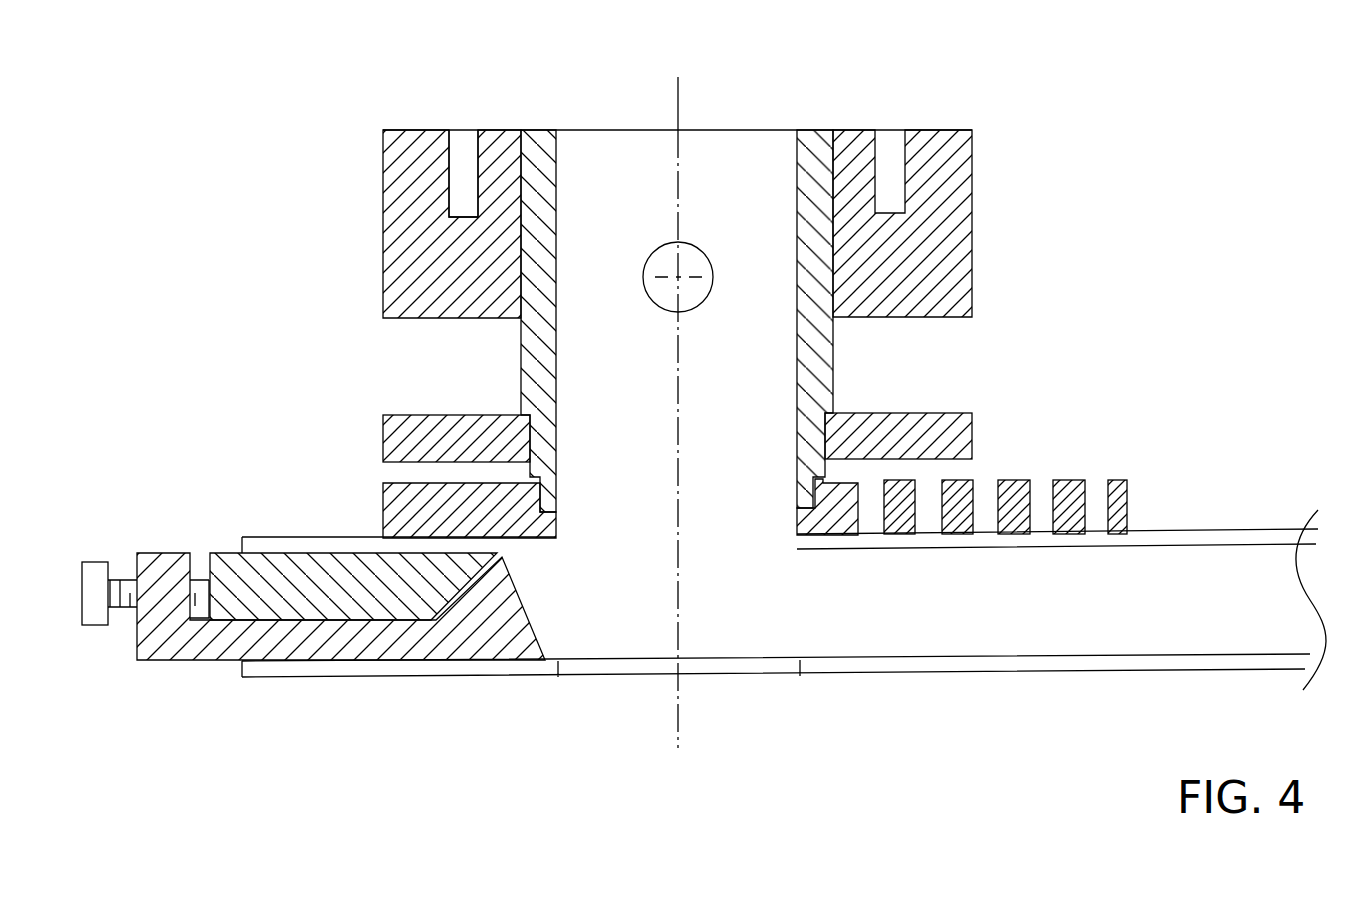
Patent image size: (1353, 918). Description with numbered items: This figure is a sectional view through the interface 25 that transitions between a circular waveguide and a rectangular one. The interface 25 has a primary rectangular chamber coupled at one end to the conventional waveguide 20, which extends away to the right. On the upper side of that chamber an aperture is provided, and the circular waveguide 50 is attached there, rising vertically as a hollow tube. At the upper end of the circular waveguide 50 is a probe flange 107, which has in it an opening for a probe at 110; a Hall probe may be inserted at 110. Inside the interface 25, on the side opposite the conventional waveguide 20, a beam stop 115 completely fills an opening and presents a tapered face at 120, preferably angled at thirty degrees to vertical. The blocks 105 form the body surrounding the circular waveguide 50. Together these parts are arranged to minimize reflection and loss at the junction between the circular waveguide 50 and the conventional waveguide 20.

The conventional waveguide 20 is at (1215, 547).
The interface 25 is at (793, 692).
The circular waveguide 50 is at (797, 320).
The clamp block 105 is at (383, 270).
The probe flange 107 is at (390, 192).
The opening for a probe 110 is at (700, 248).
The beam stop 115 is at (207, 616).
The tapered face 120 is at (522, 608).